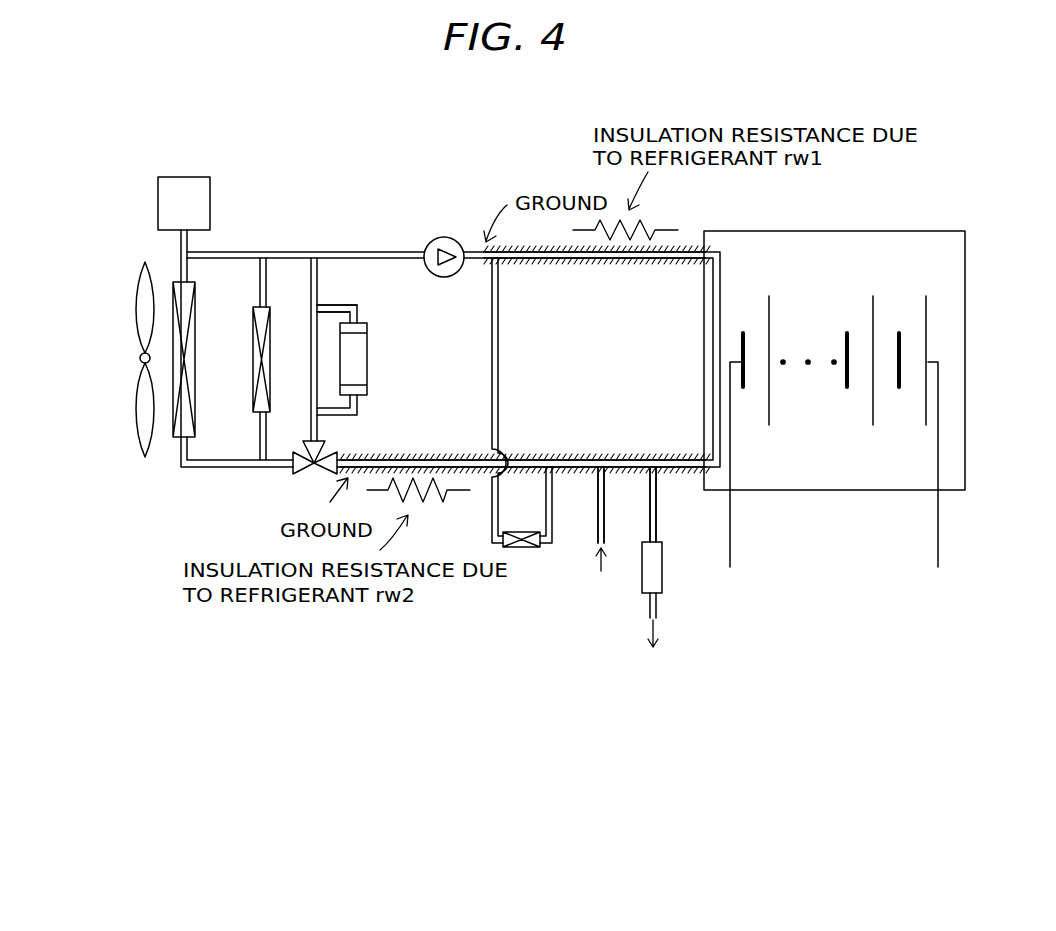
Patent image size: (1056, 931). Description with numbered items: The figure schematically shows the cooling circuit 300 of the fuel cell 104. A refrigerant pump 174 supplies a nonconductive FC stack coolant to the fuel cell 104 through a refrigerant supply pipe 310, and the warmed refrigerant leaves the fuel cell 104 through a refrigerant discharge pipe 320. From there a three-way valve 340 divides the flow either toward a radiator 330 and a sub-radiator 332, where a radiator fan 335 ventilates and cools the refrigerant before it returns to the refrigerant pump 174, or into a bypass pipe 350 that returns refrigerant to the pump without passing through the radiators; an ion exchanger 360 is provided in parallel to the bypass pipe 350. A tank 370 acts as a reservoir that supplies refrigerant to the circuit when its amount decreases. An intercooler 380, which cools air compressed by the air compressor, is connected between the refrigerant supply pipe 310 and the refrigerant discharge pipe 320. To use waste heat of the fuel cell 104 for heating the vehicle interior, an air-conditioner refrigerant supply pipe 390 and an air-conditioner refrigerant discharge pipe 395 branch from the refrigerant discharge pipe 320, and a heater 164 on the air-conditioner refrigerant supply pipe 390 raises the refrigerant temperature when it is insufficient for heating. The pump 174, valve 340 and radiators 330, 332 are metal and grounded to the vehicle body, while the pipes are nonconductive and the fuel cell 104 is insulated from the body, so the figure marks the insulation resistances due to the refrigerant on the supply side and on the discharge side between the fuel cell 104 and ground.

The cooling circuit 300 is at (70, 237).
The tank 370 is at (199, 177).
The radiator 330 is at (173, 282).
The radiator fan 335 is at (138, 307).
The sub-radiator 332 is at (257, 307).
The bypass pipe 350 is at (320, 297).
The ion exchanger 360 is at (368, 367).
The three-way valve 340 is at (292, 474).
The refrigerant pump 174 is at (436, 237).
The refrigerant supply pipe 310 is at (551, 262).
The refrigerant discharge pipe 320 is at (575, 453).
The intercooler 380 is at (523, 548).
The air-conditioner refrigerant discharge pipe 395 is at (605, 525).
The air-conditioner refrigerant supply pipe 390 is at (657, 525).
The heater 164 is at (663, 570).
The fuel cell 104 is at (949, 231).